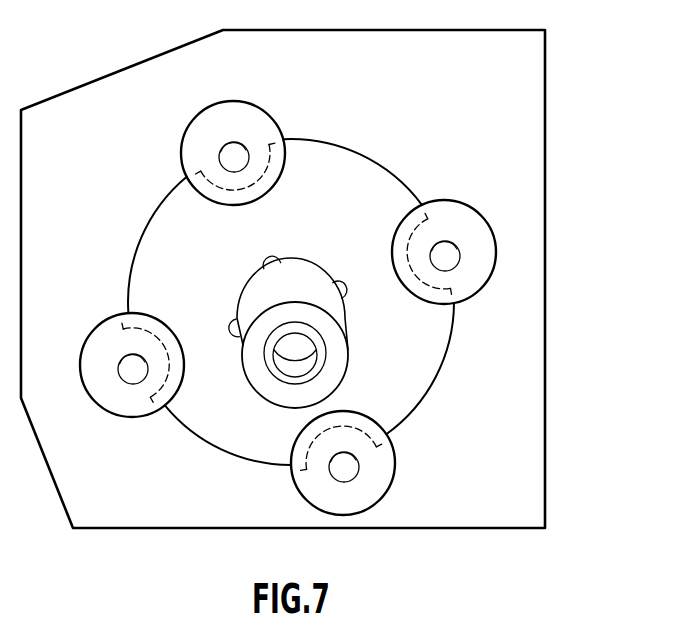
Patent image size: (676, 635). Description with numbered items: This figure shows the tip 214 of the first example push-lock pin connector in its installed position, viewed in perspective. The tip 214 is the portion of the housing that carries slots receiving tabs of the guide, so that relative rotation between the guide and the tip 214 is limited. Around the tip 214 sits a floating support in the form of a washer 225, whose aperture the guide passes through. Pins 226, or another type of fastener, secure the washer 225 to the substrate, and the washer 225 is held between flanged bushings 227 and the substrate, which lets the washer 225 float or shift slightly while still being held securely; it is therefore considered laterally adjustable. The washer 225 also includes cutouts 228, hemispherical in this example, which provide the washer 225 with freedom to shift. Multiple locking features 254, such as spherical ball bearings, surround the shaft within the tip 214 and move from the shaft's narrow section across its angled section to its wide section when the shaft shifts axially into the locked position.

The tip 214 is at (337, 345).
The washer 225 is at (430, 377).
The pins 226 is at (352, 470).
The flanged bushings 227 is at (481, 258).
The cutouts 228 is at (152, 398).
The locking features 254 is at (268, 262).